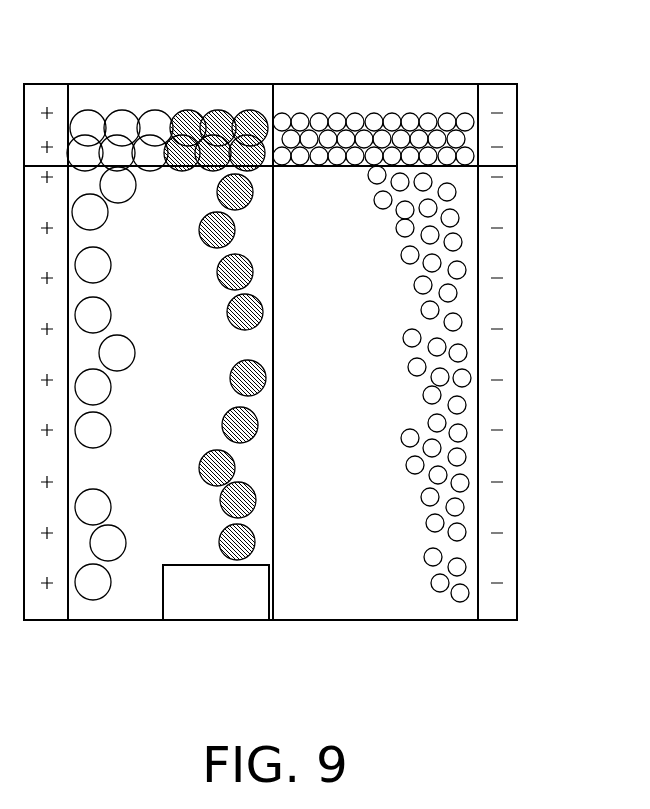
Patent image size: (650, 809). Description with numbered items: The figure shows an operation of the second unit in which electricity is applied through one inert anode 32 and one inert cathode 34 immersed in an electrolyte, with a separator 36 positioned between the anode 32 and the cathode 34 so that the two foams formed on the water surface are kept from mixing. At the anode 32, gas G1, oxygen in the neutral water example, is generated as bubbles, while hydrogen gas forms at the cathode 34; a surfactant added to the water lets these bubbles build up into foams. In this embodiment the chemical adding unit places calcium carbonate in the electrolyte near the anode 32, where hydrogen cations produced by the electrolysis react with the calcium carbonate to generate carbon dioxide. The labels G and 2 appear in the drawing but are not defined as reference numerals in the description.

The inert anode 32 is at (48, 84).
The inert cathode 34 is at (498, 84).
The separator 36 is at (273, 84).
The gas G1 is at (133, 112).
The gel particles G is at (228, 112).
The fine particles 2 is at (378, 112).